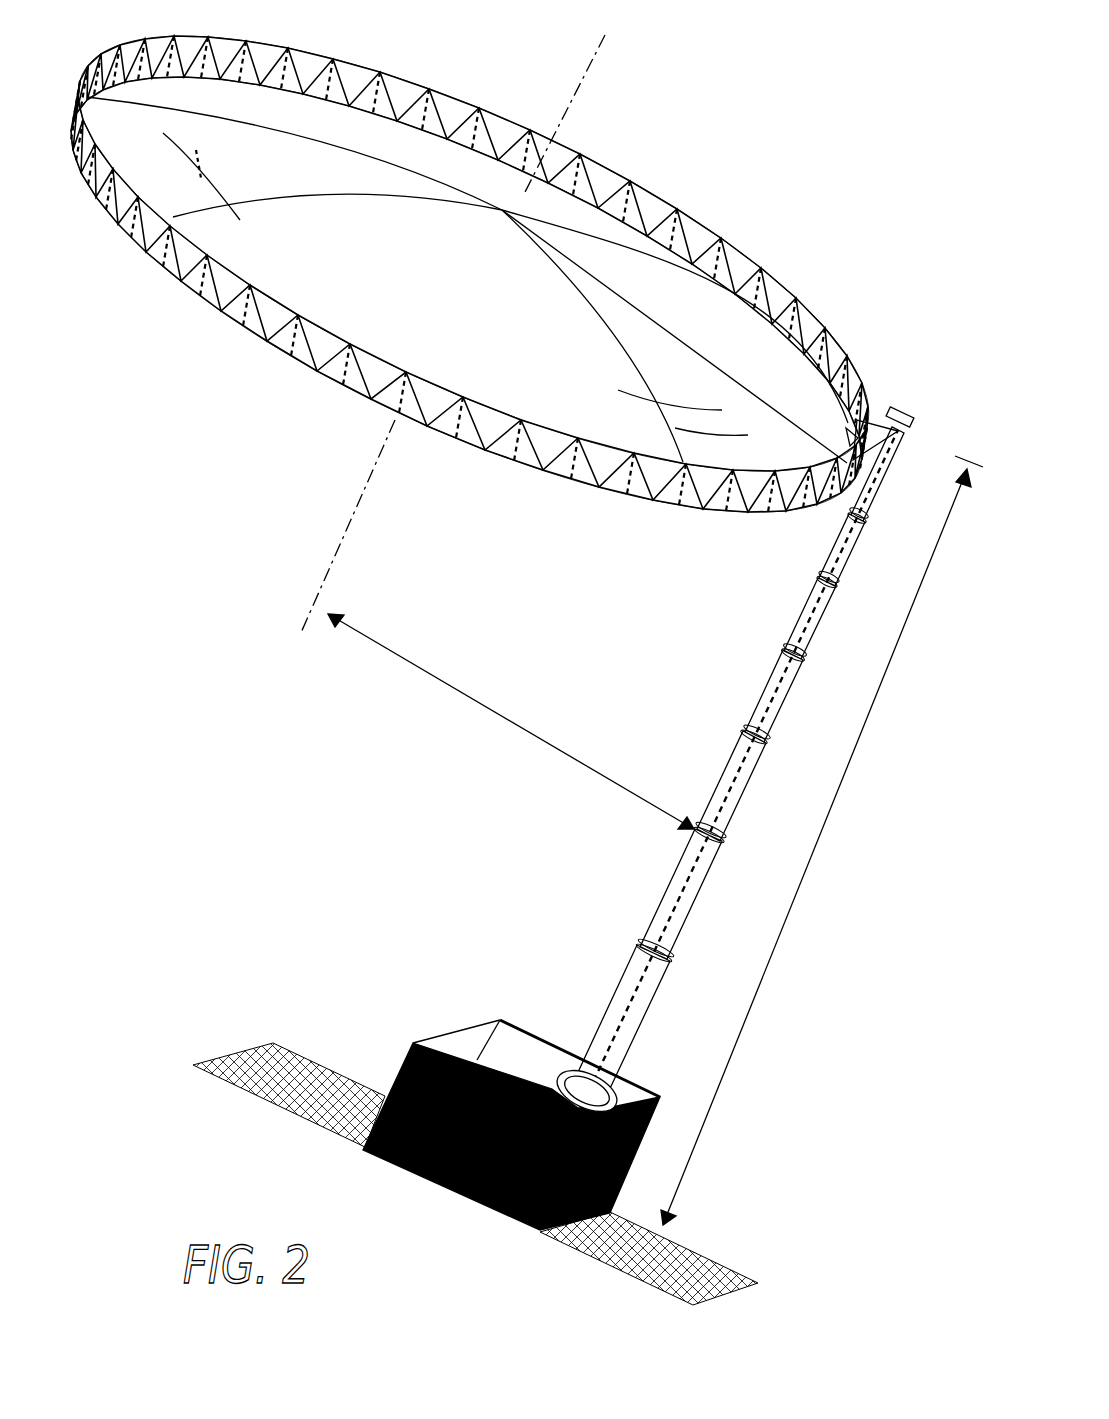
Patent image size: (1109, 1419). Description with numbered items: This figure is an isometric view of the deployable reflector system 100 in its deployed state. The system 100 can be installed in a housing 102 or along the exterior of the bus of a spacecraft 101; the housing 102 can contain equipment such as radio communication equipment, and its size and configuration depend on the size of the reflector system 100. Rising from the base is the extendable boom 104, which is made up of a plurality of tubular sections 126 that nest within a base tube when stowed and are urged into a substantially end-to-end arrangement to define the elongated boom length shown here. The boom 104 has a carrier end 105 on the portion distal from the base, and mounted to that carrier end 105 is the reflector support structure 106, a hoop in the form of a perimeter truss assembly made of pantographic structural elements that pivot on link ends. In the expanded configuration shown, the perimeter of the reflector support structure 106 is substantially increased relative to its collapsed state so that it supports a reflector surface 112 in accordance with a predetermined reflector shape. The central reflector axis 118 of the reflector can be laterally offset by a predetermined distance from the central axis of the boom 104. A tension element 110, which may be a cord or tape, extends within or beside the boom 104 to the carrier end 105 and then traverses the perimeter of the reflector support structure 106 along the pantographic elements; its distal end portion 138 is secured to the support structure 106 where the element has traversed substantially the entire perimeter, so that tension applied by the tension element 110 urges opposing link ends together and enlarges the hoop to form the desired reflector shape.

The deployable reflector system 100 is at (930, 300).
The spacecraft 101 is at (425, 1028).
The housing 102 is at (467, 1192).
The extendable boom 104 is at (706, 768).
The carrier end 105 is at (908, 437).
The reflector support structure 106 is at (110, 268).
The tension element 110 is at (300, 332).
The reflector surface 112 is at (441, 306).
The central reflector axis 118 is at (578, 94).
The tubular sections 126 is at (850, 557).
The distal end portion 138 is at (848, 432).